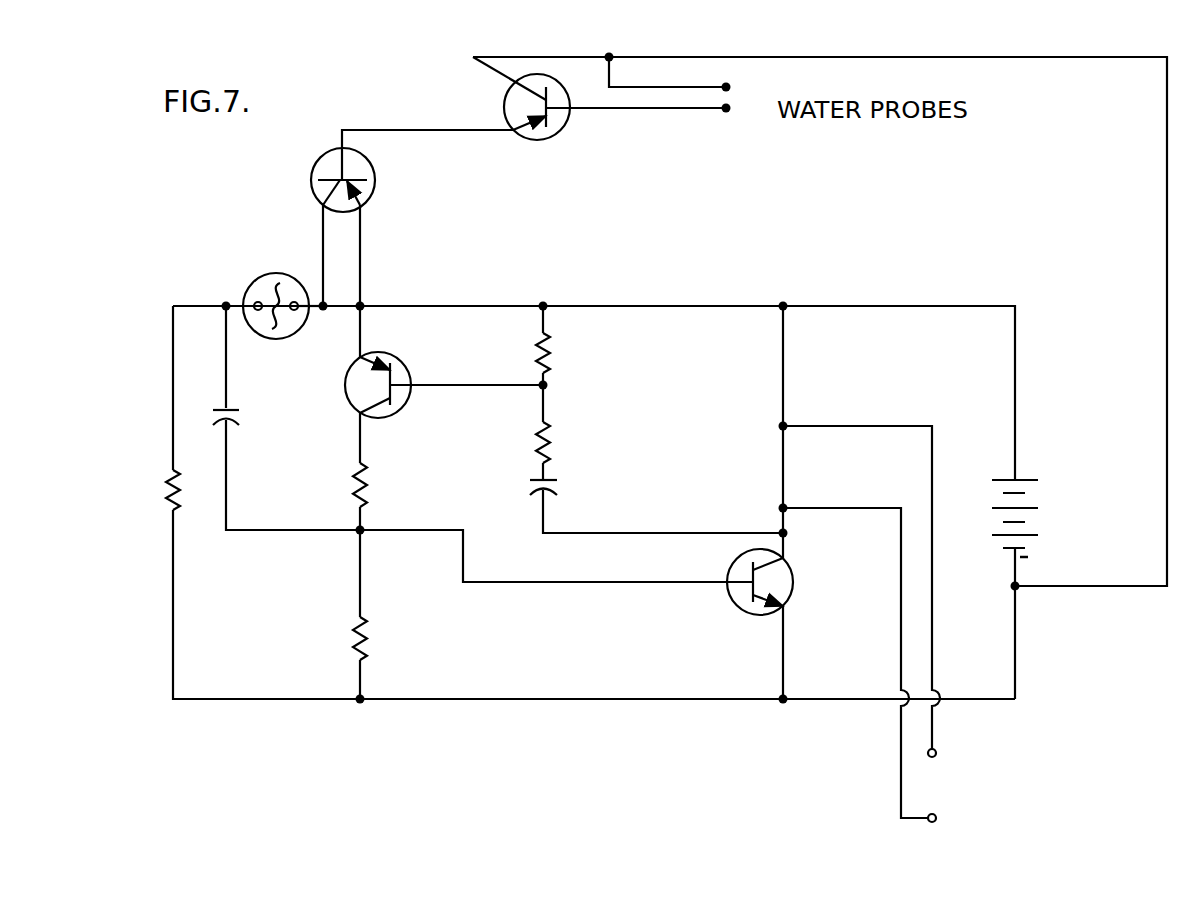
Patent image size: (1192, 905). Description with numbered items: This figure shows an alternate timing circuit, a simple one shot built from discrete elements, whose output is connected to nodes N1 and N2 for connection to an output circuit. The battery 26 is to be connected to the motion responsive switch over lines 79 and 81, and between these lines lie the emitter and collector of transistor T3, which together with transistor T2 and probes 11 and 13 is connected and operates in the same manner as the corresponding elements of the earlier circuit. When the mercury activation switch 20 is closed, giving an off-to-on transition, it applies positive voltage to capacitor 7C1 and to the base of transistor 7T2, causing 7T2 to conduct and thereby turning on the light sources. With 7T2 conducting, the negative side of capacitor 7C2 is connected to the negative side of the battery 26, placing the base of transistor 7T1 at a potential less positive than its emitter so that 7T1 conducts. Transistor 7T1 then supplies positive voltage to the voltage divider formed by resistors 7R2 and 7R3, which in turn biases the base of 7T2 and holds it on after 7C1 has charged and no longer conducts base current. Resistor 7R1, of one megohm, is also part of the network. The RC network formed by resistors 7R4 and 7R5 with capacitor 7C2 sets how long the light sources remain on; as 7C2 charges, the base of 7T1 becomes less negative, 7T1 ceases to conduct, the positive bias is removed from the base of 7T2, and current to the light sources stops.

The transistor T2 is at (519, 78).
The transistor T3 is at (364, 160).
The activation switch 20 is at (254, 282).
The line 81 is at (312, 310).
The capacitor 7C1 is at (240, 410).
The resistor 7R1 is at (178, 512).
The transistor 7T1 is at (398, 362).
The line 79 is at (500, 308).
The resistor 7R4 is at (552, 342).
The resistor 7R5 is at (552, 438).
The capacitor 7C2 is at (552, 497).
The resistor 7R2 is at (369, 472).
The resistor 7R3 is at (369, 620).
The transistor 7T2 is at (790, 596).
The battery 26 is at (1040, 520).
The probe 13 is at (689, 87).
The probe 11 is at (684, 110).
The node N1 is at (953, 755).
The node N2 is at (953, 821).